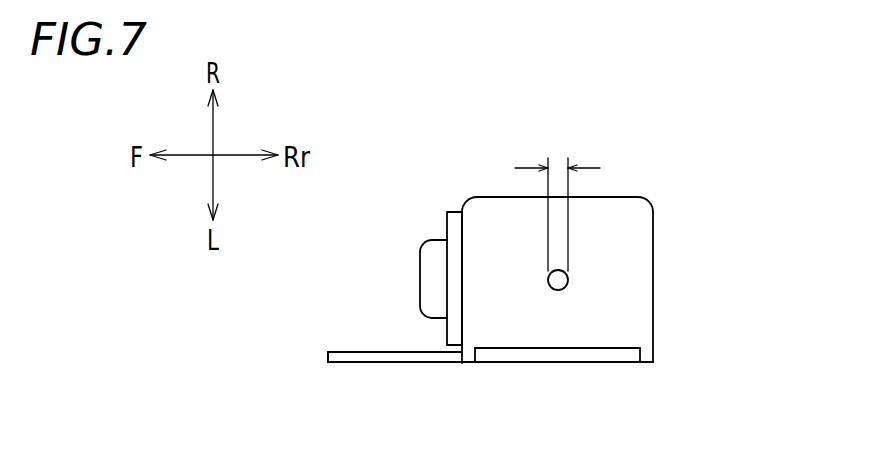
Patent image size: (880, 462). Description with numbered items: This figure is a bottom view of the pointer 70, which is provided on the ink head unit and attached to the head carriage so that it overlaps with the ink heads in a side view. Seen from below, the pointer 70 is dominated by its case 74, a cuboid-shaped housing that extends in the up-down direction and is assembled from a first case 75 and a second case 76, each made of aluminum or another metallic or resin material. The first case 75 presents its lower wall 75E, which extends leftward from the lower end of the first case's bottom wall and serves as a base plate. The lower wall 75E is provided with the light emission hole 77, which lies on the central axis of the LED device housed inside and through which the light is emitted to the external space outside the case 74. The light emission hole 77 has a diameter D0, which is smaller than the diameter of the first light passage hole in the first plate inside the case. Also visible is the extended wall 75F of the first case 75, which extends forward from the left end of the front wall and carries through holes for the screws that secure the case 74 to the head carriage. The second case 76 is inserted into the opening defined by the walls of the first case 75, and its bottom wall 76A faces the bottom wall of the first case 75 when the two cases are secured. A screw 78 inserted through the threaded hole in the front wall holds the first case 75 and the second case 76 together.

The pointer 70 is at (435, 160).
The case 74 is at (638, 187).
The first case 75 is at (405, 365).
The lower wall 75E is at (492, 228).
The extended wall 75F is at (348, 353).
The second case 76 is at (582, 367).
The bottom wall 76A is at (532, 350).
The light emission hole 77 is at (566, 284).
The screw 78 is at (420, 283).
The diameter of the light emission hole D0 is at (557, 198).